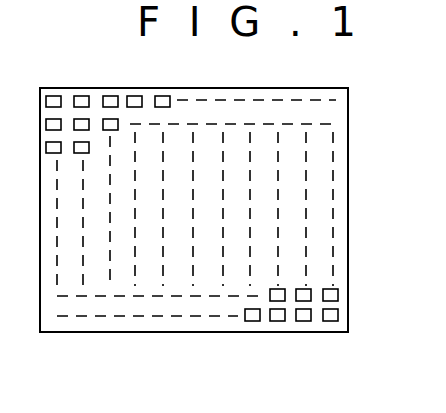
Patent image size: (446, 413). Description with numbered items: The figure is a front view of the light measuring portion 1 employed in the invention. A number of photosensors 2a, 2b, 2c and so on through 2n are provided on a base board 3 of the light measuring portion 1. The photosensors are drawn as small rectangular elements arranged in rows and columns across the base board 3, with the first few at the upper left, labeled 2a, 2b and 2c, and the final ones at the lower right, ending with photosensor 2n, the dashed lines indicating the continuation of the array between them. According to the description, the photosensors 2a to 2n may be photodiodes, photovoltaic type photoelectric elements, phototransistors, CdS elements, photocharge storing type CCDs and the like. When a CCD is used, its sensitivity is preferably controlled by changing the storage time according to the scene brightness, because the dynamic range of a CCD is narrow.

The light measuring portion 1 is at (355, 176).
The photosensor 2a is at (53, 96).
The photosensor 2b is at (81, 96).
The photosensor 2c is at (110, 96).
The photosensor 2n is at (333, 322).
The base board 3 is at (343, 301).